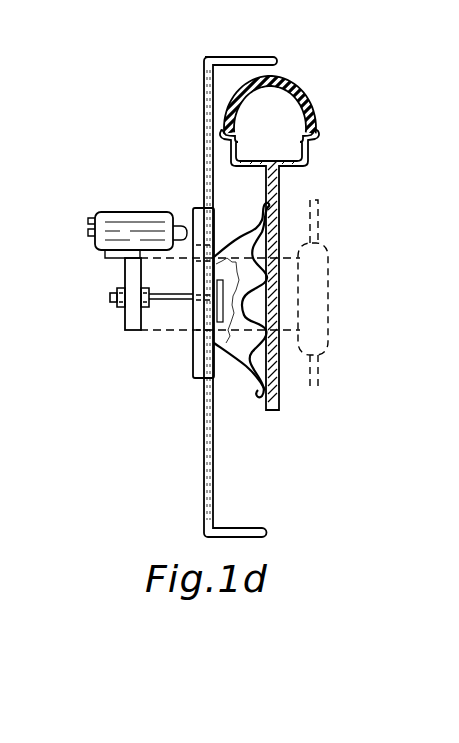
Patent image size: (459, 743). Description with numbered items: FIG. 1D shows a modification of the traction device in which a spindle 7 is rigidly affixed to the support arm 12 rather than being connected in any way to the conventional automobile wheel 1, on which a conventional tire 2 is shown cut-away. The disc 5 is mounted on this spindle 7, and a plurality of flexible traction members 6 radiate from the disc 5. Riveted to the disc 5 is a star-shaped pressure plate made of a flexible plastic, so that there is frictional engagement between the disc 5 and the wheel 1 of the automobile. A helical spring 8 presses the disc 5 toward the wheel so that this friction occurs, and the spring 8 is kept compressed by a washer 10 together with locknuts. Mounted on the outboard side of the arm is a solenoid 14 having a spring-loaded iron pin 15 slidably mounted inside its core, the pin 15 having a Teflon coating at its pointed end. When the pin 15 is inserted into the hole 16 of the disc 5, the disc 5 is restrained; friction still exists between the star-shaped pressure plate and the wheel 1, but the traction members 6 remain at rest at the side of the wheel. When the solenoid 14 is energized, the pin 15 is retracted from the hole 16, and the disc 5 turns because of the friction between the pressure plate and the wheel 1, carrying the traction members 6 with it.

The automobile wheel 1 is at (309, 158).
The tire 2 is at (303, 86).
The disc 5 is at (193, 362).
The flexible traction members 6 is at (238, 59).
The spindle 7 is at (110, 298).
The helical spring 8 is at (152, 308).
The washer 10 is at (117, 293).
The support arm 12 is at (125, 321).
The solenoid 14 is at (138, 212).
The spring-loaded iron pin 15 is at (183, 222).
The hole 16 is at (221, 215).